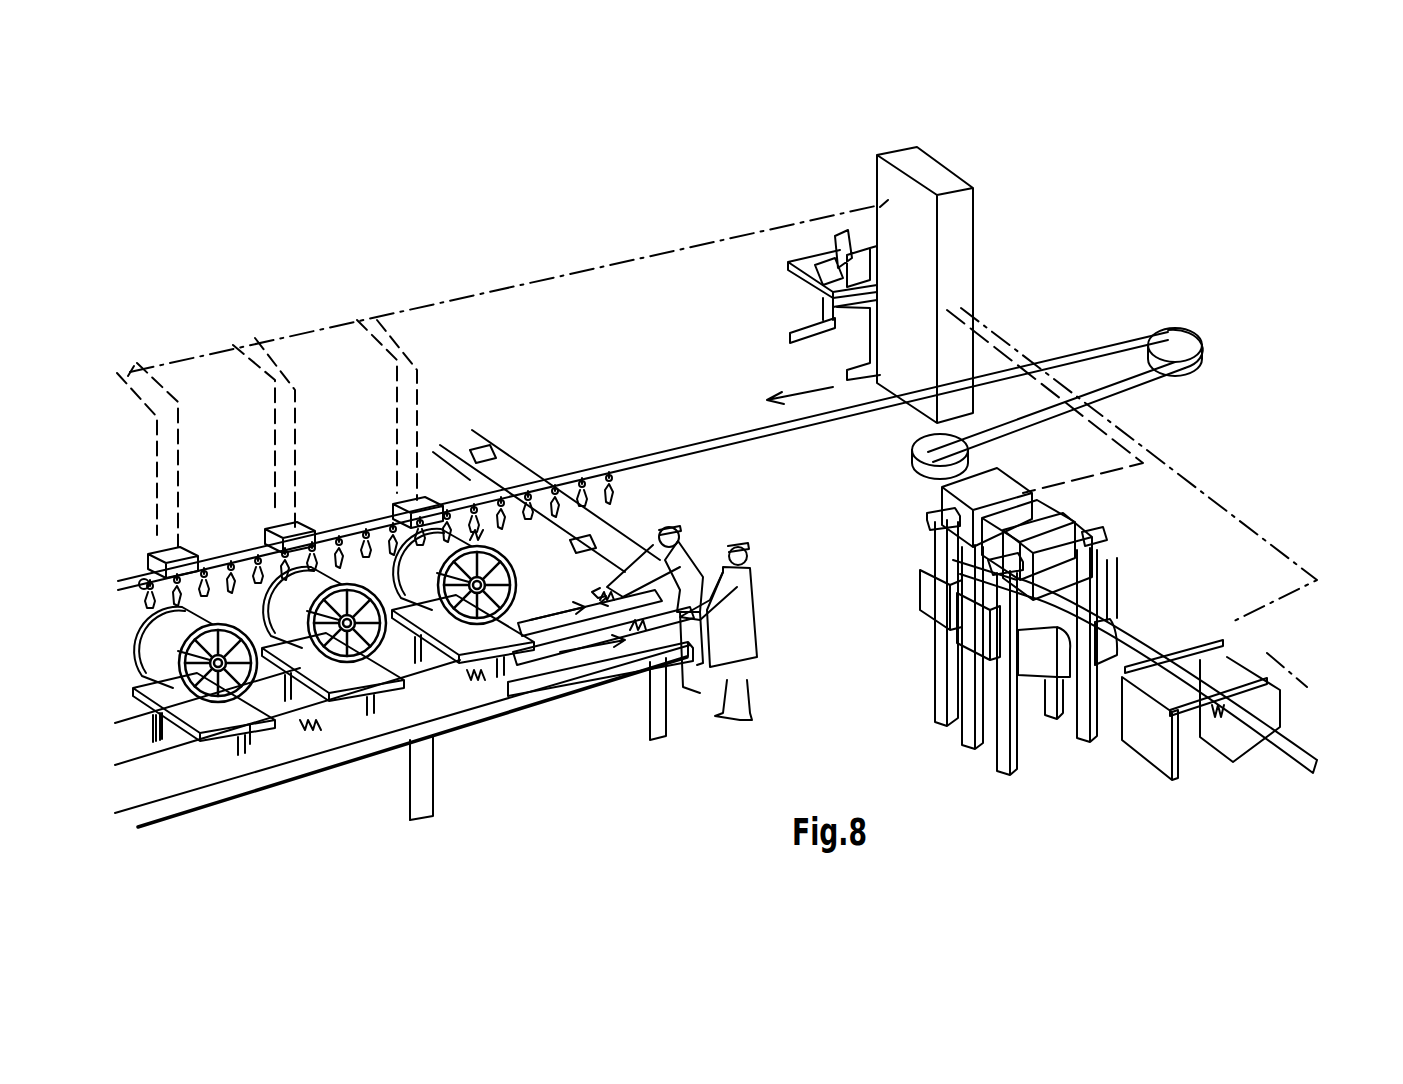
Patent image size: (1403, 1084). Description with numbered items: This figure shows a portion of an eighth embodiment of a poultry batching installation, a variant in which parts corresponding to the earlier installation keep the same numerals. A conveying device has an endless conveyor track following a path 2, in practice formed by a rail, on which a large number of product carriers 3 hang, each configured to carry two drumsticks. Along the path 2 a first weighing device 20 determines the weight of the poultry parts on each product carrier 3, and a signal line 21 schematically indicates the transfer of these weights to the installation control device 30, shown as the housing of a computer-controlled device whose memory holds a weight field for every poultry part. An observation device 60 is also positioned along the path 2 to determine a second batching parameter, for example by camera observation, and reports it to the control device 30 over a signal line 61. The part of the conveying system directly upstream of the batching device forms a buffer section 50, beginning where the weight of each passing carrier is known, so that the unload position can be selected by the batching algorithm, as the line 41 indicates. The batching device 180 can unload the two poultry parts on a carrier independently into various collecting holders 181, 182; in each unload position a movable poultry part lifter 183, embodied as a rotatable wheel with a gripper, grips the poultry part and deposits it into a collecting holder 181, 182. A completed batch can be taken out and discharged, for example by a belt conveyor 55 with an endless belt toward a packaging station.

The path 2 is at (1326, 745).
The product carrier 3 is at (656, 493).
The first weighing device 20 is at (1136, 563).
The signal line 21 is at (1083, 473).
The installation control device 30 is at (960, 232).
The line 41 is at (587, 268).
The buffer section 50 is at (1132, 322).
The belt conveyor 55 is at (537, 665).
The observation device 60 is at (1215, 778).
The signal line 61 is at (1243, 520).
The batching device 180 is at (361, 490).
The collecting holder 181 is at (485, 653).
The collecting holder 182 is at (367, 573).
The movable poultry part lifter 183 is at (505, 567).